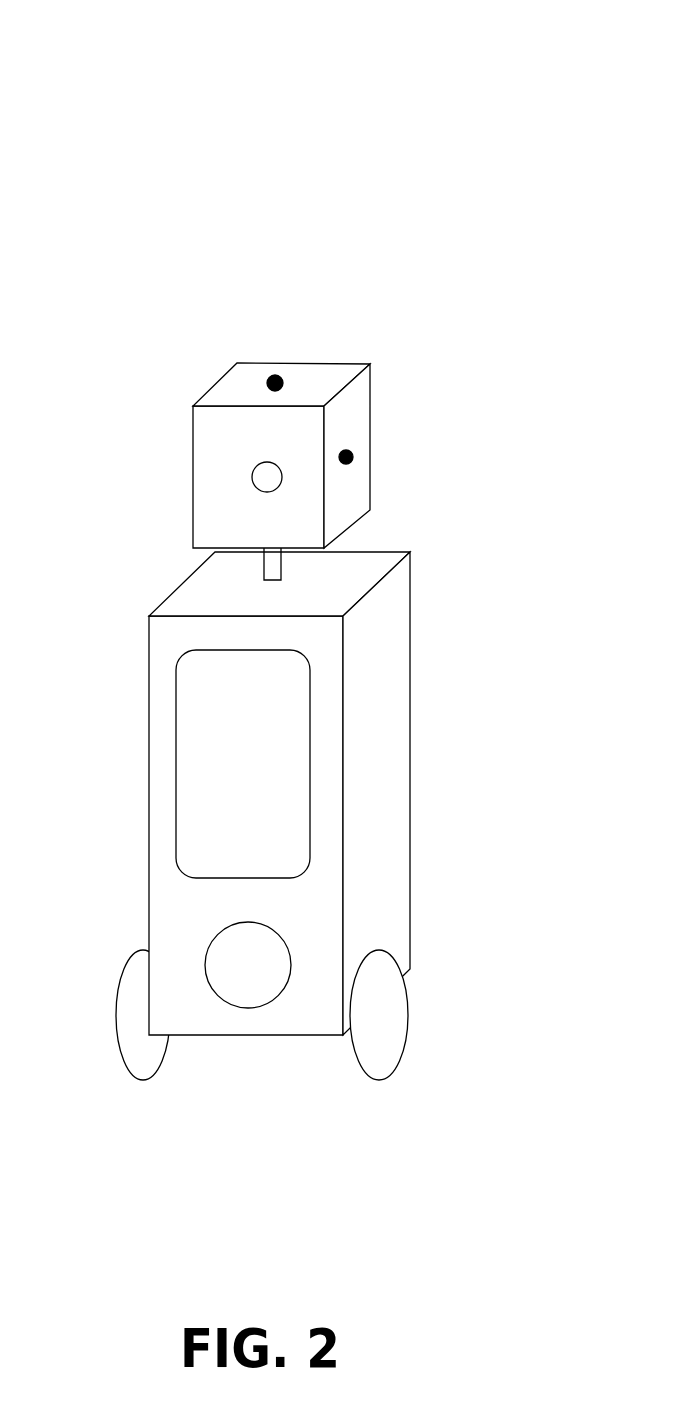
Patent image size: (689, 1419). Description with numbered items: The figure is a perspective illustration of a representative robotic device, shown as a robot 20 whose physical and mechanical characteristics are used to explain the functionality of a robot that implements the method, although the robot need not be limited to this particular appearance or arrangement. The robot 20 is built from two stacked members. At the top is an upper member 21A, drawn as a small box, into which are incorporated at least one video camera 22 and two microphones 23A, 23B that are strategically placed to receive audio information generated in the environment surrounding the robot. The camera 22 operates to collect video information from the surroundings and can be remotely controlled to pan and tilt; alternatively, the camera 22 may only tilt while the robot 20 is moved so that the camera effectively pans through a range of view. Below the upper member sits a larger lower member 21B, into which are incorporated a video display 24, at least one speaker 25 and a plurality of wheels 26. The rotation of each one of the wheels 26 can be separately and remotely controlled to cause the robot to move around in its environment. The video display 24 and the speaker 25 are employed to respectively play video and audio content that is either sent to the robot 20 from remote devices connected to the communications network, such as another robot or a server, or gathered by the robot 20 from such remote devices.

The robot 20 is at (282, 598).
The upper member 21A is at (370, 407).
The lower member 21B is at (410, 780).
The video camera 22 is at (256, 491).
The microphone 23A is at (275, 375).
The microphone 23B is at (349, 453).
The video display 24 is at (243, 764).
The speaker 25 is at (220, 922).
The wheels 26 is at (363, 1068).